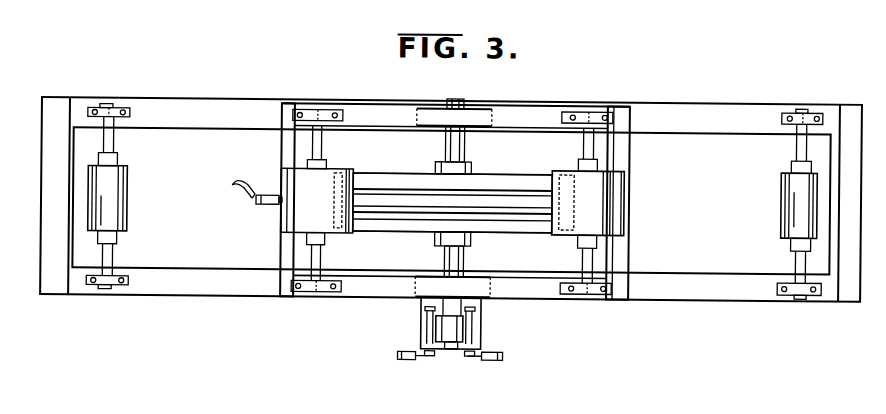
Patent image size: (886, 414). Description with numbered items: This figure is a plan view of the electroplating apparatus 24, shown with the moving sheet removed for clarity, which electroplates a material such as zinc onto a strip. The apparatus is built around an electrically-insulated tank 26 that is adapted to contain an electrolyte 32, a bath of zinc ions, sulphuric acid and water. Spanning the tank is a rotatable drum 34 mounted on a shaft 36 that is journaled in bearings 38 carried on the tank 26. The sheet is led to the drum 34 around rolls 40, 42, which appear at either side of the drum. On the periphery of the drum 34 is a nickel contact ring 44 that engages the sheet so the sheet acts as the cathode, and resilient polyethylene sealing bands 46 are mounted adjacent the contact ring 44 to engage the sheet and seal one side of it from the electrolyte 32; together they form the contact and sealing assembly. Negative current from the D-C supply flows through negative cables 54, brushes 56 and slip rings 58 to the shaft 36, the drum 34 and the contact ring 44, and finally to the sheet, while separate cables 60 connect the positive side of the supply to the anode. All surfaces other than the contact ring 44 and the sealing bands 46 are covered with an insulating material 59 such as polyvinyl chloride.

The electroplating apparatus 24 is at (299, 94).
The electrically-insulated tank 26 is at (700, 300).
The electrolyte 32 is at (553, 262).
The drum 34 is at (492, 177).
The shaft 36 is at (465, 254).
The bearings 38 is at (490, 118).
The roll 40 is at (127, 208).
The roll 42 is at (293, 210).
The contact ring 44 is at (367, 197).
The resilient sealing bands 46 is at (397, 183).
The negative cables 54 is at (409, 356).
The brushes 56 is at (438, 330).
The slip rings 58 is at (452, 340).
The insulating material 59 is at (530, 172).
The cables 60 is at (240, 186).